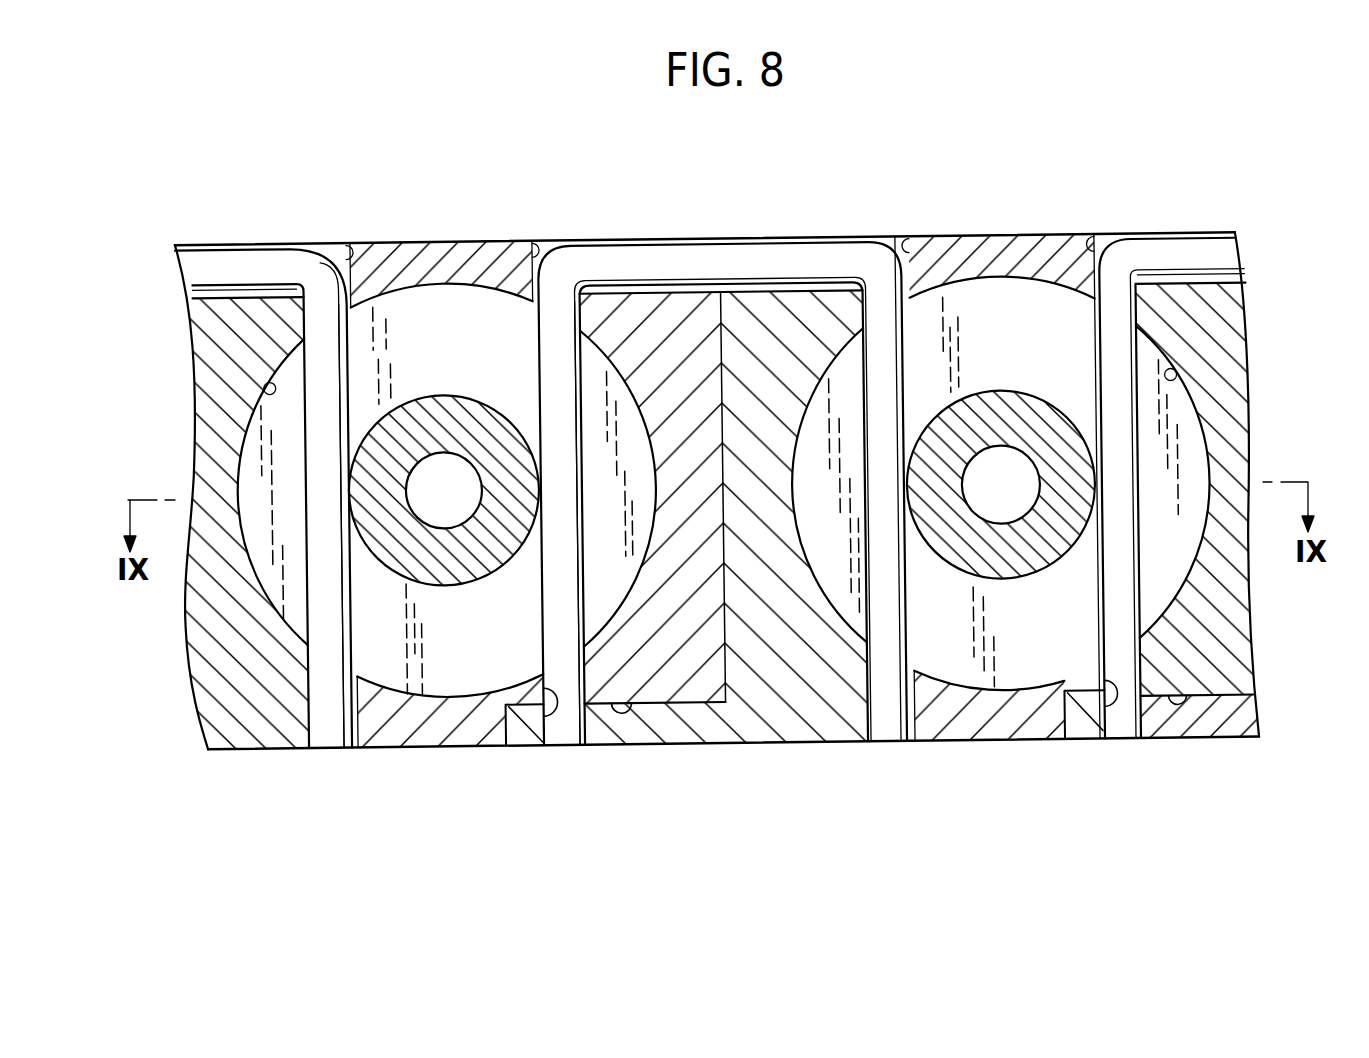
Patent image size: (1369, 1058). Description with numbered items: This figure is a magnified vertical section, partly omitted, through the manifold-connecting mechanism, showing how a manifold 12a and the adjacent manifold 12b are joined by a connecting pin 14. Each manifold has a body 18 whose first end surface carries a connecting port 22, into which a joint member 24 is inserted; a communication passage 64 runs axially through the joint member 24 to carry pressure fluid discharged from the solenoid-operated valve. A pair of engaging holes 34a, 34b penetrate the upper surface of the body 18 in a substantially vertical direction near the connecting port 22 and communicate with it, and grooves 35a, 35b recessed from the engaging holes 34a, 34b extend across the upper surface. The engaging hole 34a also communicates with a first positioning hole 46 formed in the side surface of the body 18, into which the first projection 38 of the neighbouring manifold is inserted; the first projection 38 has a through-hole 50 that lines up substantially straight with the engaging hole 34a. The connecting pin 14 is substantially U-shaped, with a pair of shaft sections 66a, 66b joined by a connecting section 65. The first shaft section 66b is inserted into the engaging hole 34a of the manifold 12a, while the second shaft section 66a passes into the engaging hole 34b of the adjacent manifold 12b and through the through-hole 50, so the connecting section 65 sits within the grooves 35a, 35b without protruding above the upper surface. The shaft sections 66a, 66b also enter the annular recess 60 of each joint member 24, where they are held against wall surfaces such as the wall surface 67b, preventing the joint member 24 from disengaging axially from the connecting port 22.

The manifold 12a is at (1259, 395).
The adjacent manifold 12b is at (206, 409).
The connecting pin 14 is at (235, 246).
The body 18 is at (213, 663).
The connecting port 22 is at (275, 378).
The joint member 24 is at (445, 415).
The engaging hole 34a is at (537, 245).
The engaging hole 34b is at (343, 247).
The groove 35a is at (636, 286).
The groove 35b is at (190, 284).
The first projection 38 is at (692, 737).
The first positioning hole 46 is at (622, 702).
The through-hole 50 is at (545, 686).
The annular recess 60 is at (493, 410).
The communication passage 64 is at (445, 505).
The connecting section 65 is at (205, 262).
The shaft section 66a is at (337, 737).
The shaft section 66b is at (553, 733).
The wall surface 67b is at (447, 688).